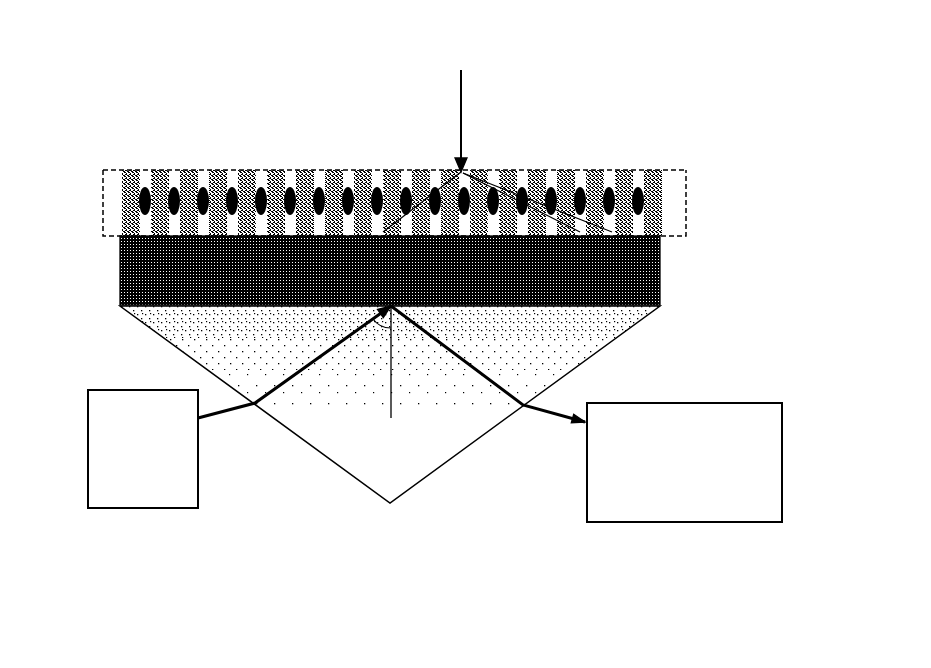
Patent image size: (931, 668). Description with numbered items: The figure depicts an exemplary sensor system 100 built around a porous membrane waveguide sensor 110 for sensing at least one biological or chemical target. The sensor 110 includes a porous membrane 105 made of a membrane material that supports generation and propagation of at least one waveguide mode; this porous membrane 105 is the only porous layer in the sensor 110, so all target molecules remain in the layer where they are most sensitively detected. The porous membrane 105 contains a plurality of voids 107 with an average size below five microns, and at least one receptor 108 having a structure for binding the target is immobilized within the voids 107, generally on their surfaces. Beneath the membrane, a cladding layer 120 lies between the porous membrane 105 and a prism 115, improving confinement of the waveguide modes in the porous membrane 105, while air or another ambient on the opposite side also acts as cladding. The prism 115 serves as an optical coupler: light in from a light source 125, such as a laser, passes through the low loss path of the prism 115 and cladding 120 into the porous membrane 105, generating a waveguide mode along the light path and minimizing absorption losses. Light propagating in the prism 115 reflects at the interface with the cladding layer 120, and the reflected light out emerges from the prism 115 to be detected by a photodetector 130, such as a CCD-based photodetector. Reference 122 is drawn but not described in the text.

The sensor system 100 is at (420, 644).
The porous membrane 105 is at (773, 398).
The voids 107 is at (551, 162).
The receptor 108 is at (609, 172).
The porous membrane waveguide sensor 110 is at (88, 433).
The prism 115 is at (323, 463).
The cladding layer 120 is at (108, 170).
The top surface 122 is at (675, 170).
The light source 125 is at (143, 449).
The photodetector 130 is at (684, 462).